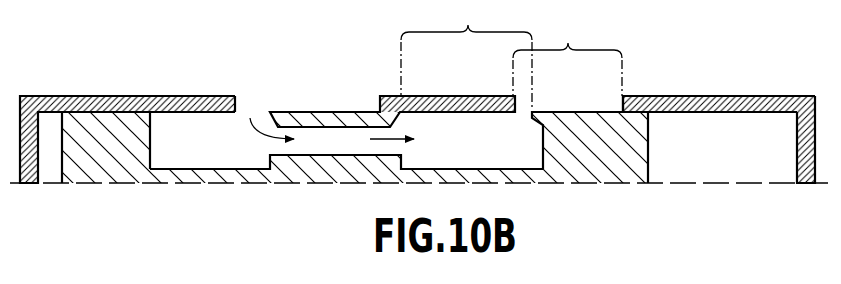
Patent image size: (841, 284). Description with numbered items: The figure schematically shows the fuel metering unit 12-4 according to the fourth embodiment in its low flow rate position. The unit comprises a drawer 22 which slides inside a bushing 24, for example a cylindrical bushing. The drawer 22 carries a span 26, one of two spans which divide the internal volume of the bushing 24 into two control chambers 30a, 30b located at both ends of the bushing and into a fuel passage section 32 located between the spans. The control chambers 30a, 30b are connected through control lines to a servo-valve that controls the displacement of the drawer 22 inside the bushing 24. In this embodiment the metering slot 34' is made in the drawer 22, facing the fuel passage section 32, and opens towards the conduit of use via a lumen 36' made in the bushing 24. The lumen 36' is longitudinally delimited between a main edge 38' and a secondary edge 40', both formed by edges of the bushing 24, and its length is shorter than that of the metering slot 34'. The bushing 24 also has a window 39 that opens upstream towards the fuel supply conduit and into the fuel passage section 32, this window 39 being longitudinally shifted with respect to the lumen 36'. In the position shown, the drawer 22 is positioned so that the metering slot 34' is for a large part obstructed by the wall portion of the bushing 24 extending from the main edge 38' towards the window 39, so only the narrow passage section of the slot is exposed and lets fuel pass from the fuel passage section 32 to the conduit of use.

The fuel metering unit 12-4 is at (642, 73).
The drawer 22 is at (581, 152).
The bushing 24 is at (683, 97).
The span 26 is at (118, 152).
The control chamber 30a is at (46, 152).
The control chamber 30b is at (753, 152).
The fuel passage section 32 is at (200, 156).
The metering slot 34' is at (466, 56).
The lumen 36' is at (567, 57).
The main edge 38' is at (399, 93).
The window 39 is at (236, 100).
The secondary edge 40' is at (605, 89).